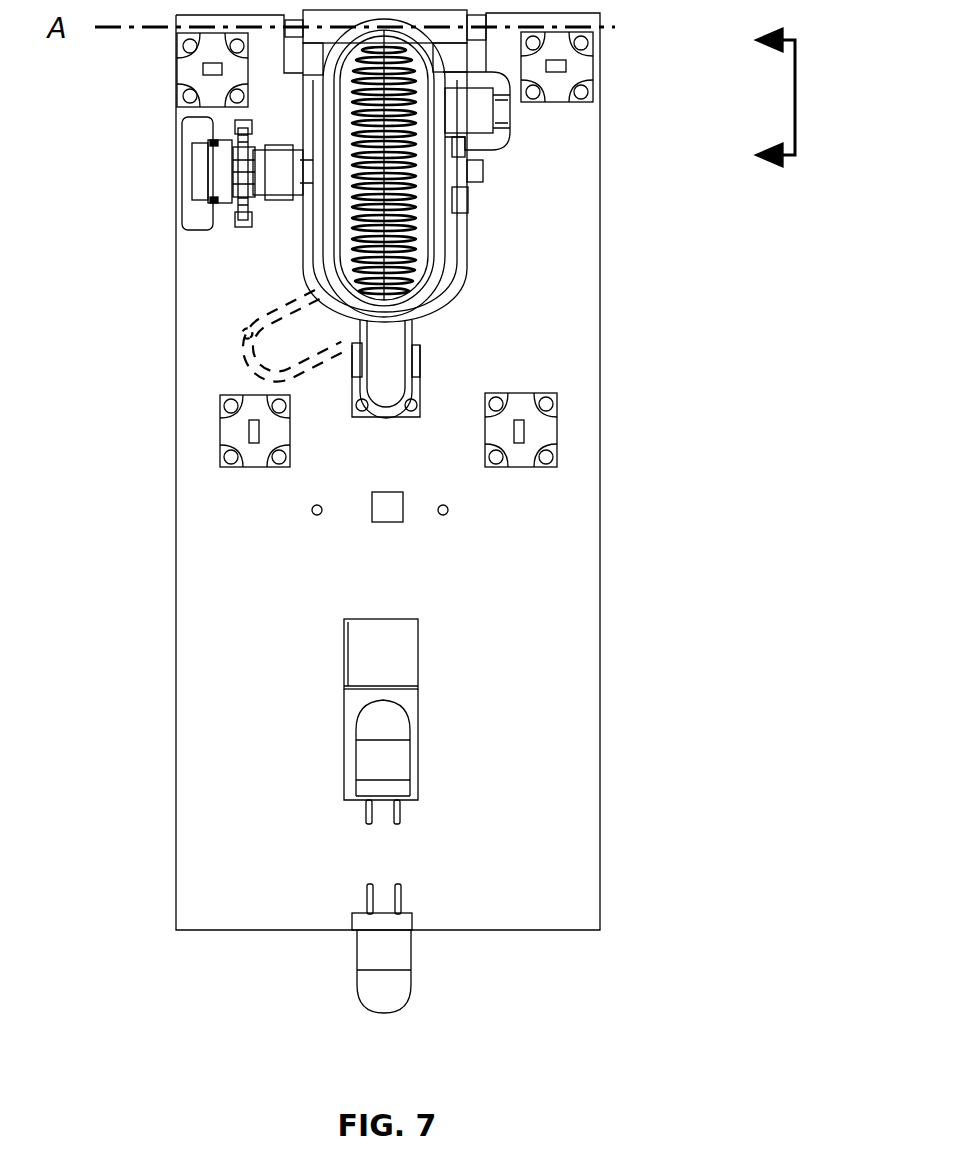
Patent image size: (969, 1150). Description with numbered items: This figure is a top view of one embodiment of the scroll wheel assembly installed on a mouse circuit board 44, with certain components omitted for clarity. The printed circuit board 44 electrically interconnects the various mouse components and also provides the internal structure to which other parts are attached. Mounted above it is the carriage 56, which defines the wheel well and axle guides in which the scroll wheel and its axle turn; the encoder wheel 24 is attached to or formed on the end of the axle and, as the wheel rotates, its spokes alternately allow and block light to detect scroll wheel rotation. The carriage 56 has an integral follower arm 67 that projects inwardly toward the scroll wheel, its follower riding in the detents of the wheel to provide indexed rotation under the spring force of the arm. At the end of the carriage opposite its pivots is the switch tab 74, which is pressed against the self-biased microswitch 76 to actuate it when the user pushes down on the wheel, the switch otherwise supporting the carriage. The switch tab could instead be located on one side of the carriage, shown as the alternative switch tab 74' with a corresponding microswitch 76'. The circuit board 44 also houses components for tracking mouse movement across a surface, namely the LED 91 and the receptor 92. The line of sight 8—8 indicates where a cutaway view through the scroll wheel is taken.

The encoder wheel 24 is at (233, 151).
The follower arm 67 is at (468, 108).
The carriage 56 is at (467, 245).
The switch tab 74 is at (433, 369).
The switch tab 74' is at (221, 337).
The microswitch 76 is at (368, 438).
The screw (pivoted position) 76' is at (178, 357).
The printed circuit board 44 is at (266, 591).
The receptor 92 is at (383, 666).
The LED 91 is at (383, 760).
The line of sight 8 is at (763, 99).